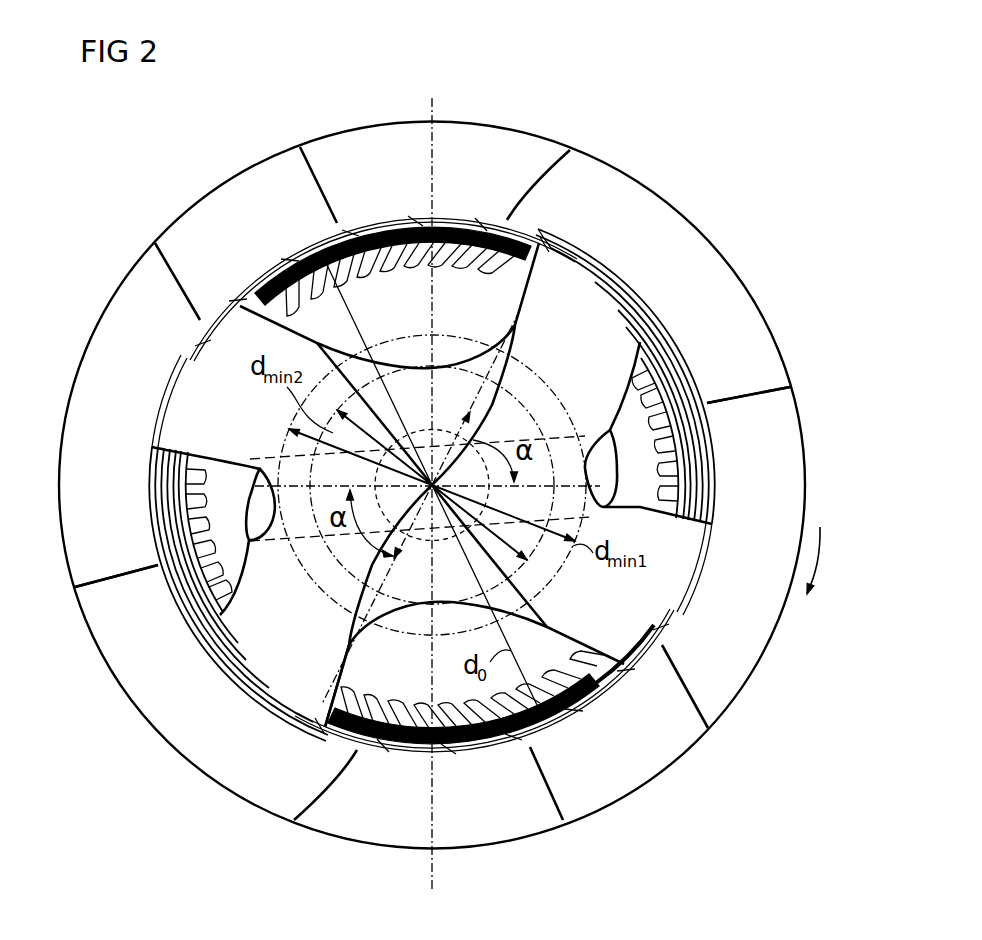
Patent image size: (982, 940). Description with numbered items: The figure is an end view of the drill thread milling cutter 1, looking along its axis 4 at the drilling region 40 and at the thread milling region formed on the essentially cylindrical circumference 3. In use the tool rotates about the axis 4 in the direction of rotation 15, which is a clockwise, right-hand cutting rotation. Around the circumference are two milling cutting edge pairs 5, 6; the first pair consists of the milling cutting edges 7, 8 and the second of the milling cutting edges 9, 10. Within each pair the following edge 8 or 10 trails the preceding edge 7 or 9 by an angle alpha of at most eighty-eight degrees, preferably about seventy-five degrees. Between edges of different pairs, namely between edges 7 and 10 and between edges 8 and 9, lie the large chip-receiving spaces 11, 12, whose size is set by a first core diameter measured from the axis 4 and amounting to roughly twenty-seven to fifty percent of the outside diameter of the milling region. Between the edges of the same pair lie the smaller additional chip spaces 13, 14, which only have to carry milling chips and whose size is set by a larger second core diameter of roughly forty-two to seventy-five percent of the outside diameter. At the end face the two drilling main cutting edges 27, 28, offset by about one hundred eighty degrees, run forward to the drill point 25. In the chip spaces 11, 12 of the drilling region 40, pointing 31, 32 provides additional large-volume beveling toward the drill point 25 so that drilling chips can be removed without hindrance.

The drill thread milling cutter 1 is at (288, 93).
The cylindrical circumference 3 is at (363, 225).
The axis 4 is at (432, 485).
The milling cutting edge pair 5 is at (587, 330).
The milling cutting edge pair 6 is at (245, 686).
The milling cutting edge 7 is at (713, 507).
The milling cutting edge 8 is at (547, 258).
The milling cutting edge 9 is at (157, 443).
The milling cutting edge 10 is at (331, 725).
The chip-receiving space 11 is at (623, 683).
The chip-receiving space 12 is at (323, 327).
The additional chip space 13 is at (652, 483).
The additional chip space 14 is at (236, 525).
The direction of rotation 15 is at (832, 552).
The drill point 25 is at (275, 645).
The drilling main cutting edge 27 is at (556, 268).
The drilling main cutting edge 28 is at (403, 604).
The pointing 31 is at (453, 578).
The pointing 32 is at (432, 485).
The drilling region 40 is at (320, 657).